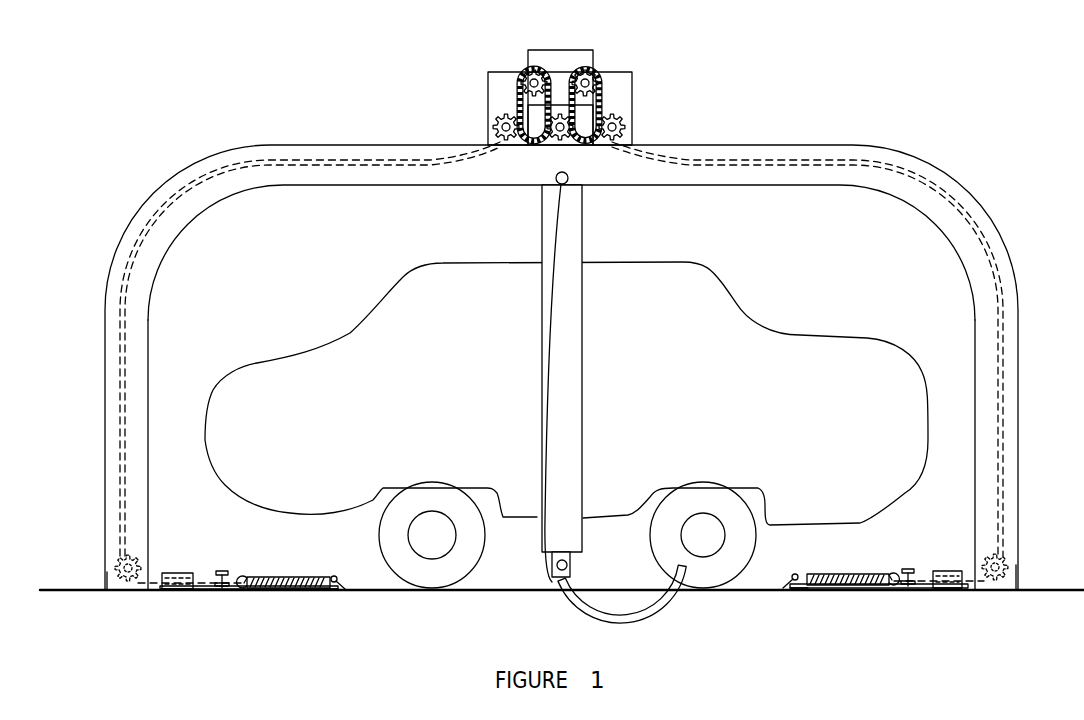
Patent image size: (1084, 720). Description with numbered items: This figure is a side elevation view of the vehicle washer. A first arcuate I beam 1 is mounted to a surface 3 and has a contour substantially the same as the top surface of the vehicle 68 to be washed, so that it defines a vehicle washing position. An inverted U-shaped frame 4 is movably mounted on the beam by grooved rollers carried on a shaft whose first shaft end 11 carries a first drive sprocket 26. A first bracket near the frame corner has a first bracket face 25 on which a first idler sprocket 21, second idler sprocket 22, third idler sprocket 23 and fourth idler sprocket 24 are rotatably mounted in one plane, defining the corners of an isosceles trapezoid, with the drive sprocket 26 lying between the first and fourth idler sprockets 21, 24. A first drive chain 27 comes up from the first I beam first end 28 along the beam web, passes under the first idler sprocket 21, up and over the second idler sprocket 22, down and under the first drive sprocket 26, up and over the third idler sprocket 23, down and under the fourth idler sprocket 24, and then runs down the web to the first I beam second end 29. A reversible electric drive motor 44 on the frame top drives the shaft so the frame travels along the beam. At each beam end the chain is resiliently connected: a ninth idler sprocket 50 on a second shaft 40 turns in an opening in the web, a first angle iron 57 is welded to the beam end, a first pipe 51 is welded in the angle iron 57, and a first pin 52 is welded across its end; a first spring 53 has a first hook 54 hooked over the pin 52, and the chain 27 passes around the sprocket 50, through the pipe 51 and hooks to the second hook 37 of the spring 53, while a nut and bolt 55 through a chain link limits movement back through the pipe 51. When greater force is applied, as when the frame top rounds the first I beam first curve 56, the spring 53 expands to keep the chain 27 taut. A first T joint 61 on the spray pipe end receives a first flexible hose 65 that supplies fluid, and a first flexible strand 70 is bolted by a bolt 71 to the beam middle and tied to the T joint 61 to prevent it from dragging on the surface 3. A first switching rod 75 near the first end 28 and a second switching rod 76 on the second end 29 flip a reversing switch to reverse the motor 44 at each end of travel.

The first arcuate I beam 1 is at (366, 186).
The surface 3 is at (689, 590).
The inverted U-shaped frame 4 is at (584, 205).
The first shaft end 11 is at (548, 138).
The first idler sprocket 21 is at (493, 130).
The second idler sprocket 22 is at (526, 74).
The third idler sprocket 23 is at (595, 73).
The fourth idler sprocket 24 is at (627, 128).
The first bracket face 25 is at (490, 82).
The first drive sprocket 26 is at (565, 136).
The first drive chain 27 is at (602, 97).
The first I beam first end 28 is at (106, 579).
The first I beam second end 29 is at (1017, 572).
The second hook 37 is at (242, 576).
The second shaft 40 is at (127, 583).
The reversible electric drive motor 44 is at (573, 50).
The ninth idler sprocket 50 is at (116, 562).
The first pipe 51 is at (175, 573).
The first pin 52 is at (323, 589).
The first spring 53 is at (286, 577).
The first hook 54 is at (338, 582).
The nut and bolt 55 is at (222, 571).
The first I beam first curve 56 is at (178, 178).
The first angle iron 57 is at (257, 590).
The first T joint 61 is at (570, 563).
The first flexible hose 65 is at (580, 607).
The vehicle 68 is at (741, 298).
The first flexible strand 70 is at (548, 253).
The bolt 71 is at (557, 187).
The first switching rod 75 is at (150, 543).
The second switching rod 76 is at (976, 538).